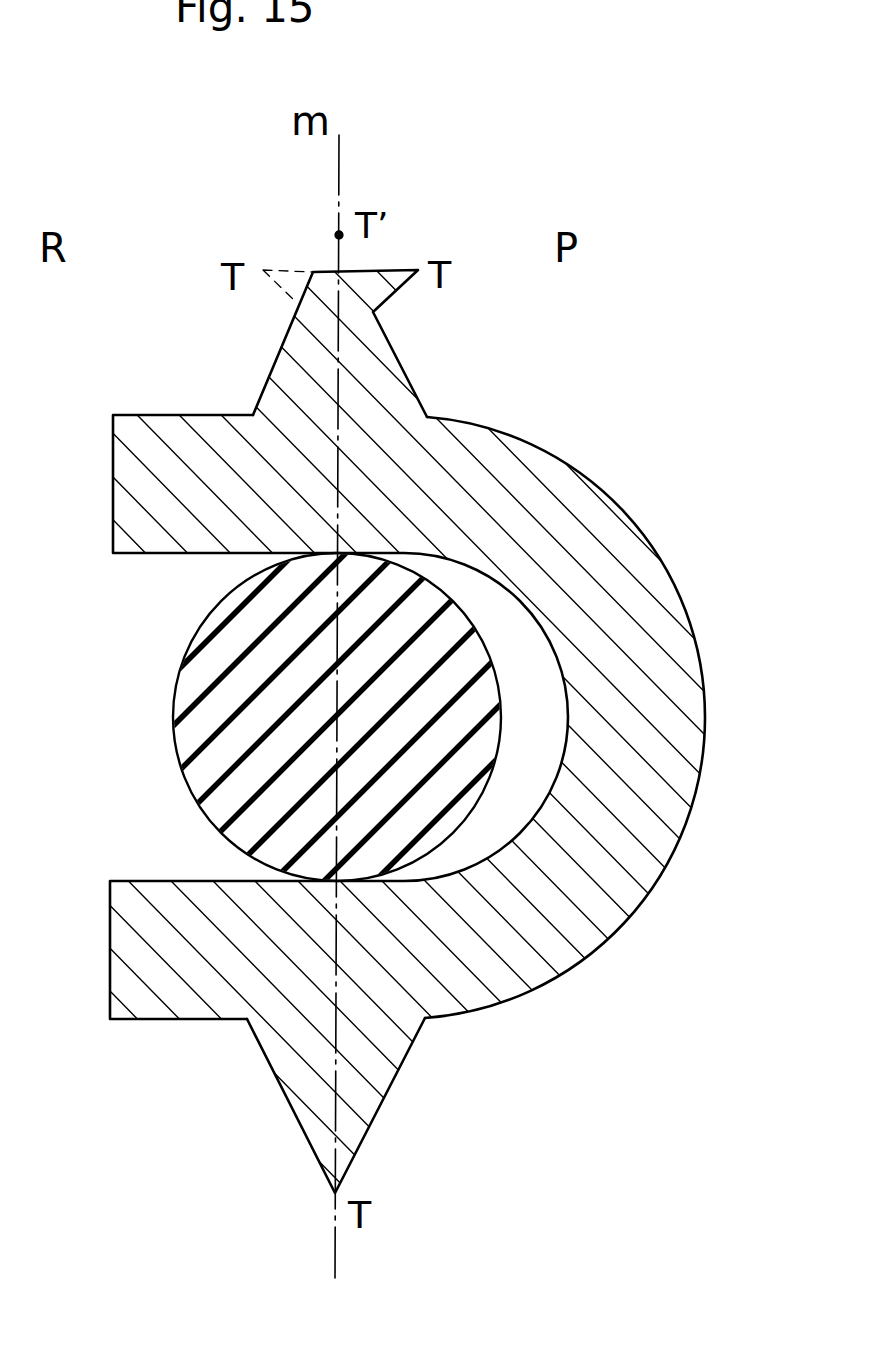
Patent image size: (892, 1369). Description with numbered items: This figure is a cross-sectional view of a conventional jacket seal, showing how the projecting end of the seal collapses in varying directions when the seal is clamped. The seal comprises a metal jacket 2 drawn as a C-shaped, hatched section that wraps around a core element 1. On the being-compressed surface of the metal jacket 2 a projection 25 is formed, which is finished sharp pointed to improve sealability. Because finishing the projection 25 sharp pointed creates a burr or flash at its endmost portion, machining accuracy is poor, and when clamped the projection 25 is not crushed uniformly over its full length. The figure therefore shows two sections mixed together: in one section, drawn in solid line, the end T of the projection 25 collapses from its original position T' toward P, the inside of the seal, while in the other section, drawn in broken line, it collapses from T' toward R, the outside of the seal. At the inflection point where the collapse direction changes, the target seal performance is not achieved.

The ball 1 is at (212, 705).
The metal jacket 2 is at (658, 510).
The projection 25 is at (293, 377).